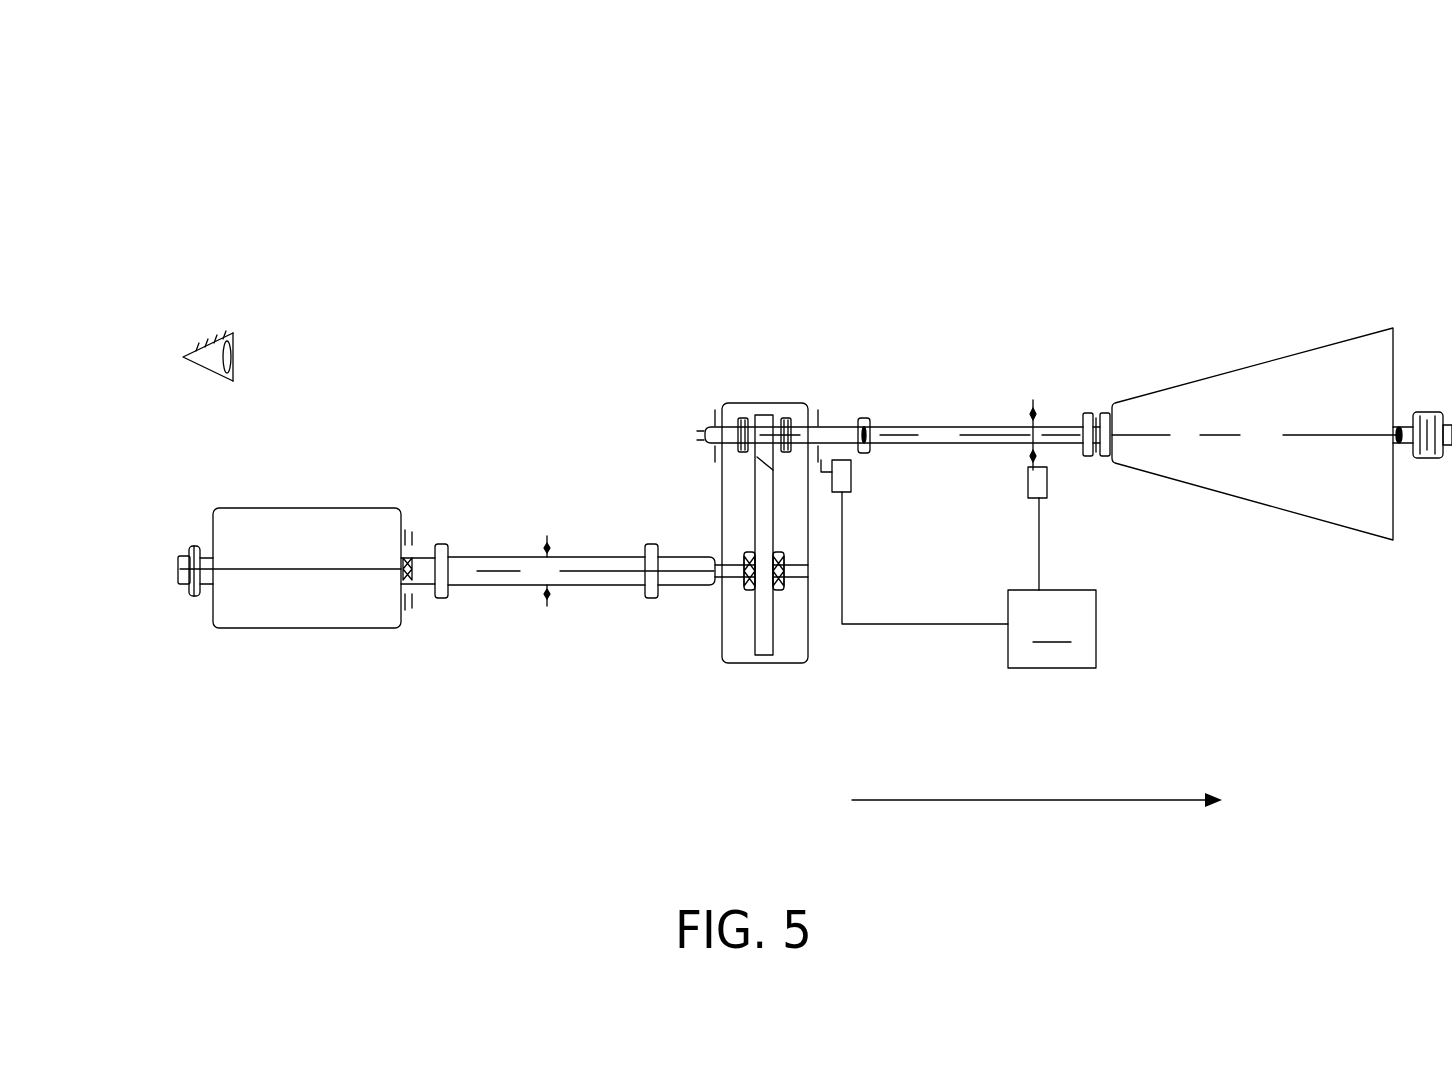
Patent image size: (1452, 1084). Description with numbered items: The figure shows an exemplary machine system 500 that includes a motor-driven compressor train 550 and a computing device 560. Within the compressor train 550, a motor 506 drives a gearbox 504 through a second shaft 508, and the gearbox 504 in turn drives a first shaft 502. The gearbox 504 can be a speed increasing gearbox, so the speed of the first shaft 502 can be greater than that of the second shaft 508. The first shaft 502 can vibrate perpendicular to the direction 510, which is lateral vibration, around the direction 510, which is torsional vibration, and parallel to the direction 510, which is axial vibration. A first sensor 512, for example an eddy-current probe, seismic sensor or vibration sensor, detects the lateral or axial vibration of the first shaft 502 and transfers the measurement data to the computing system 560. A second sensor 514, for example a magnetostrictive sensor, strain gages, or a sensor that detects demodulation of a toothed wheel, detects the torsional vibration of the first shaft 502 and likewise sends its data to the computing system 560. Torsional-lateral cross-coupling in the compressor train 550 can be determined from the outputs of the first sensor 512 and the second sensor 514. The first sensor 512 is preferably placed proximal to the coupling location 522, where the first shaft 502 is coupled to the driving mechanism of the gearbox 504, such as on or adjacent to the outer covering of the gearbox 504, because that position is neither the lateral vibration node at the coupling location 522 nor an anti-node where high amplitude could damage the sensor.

The machine system 500 is at (231, 112).
The first shaft 502 is at (965, 432).
The gearbox 504 is at (770, 663).
The motor 506 is at (262, 665).
The second shaft 508 is at (497, 557).
The direction 510 is at (995, 800).
The first sensor 512 is at (843, 495).
The second sensor 514 is at (1047, 498).
The coupling location 522 is at (773, 433).
The motor-driven compressor train 550 is at (770, 326).
The computing device 560 is at (969, 580).